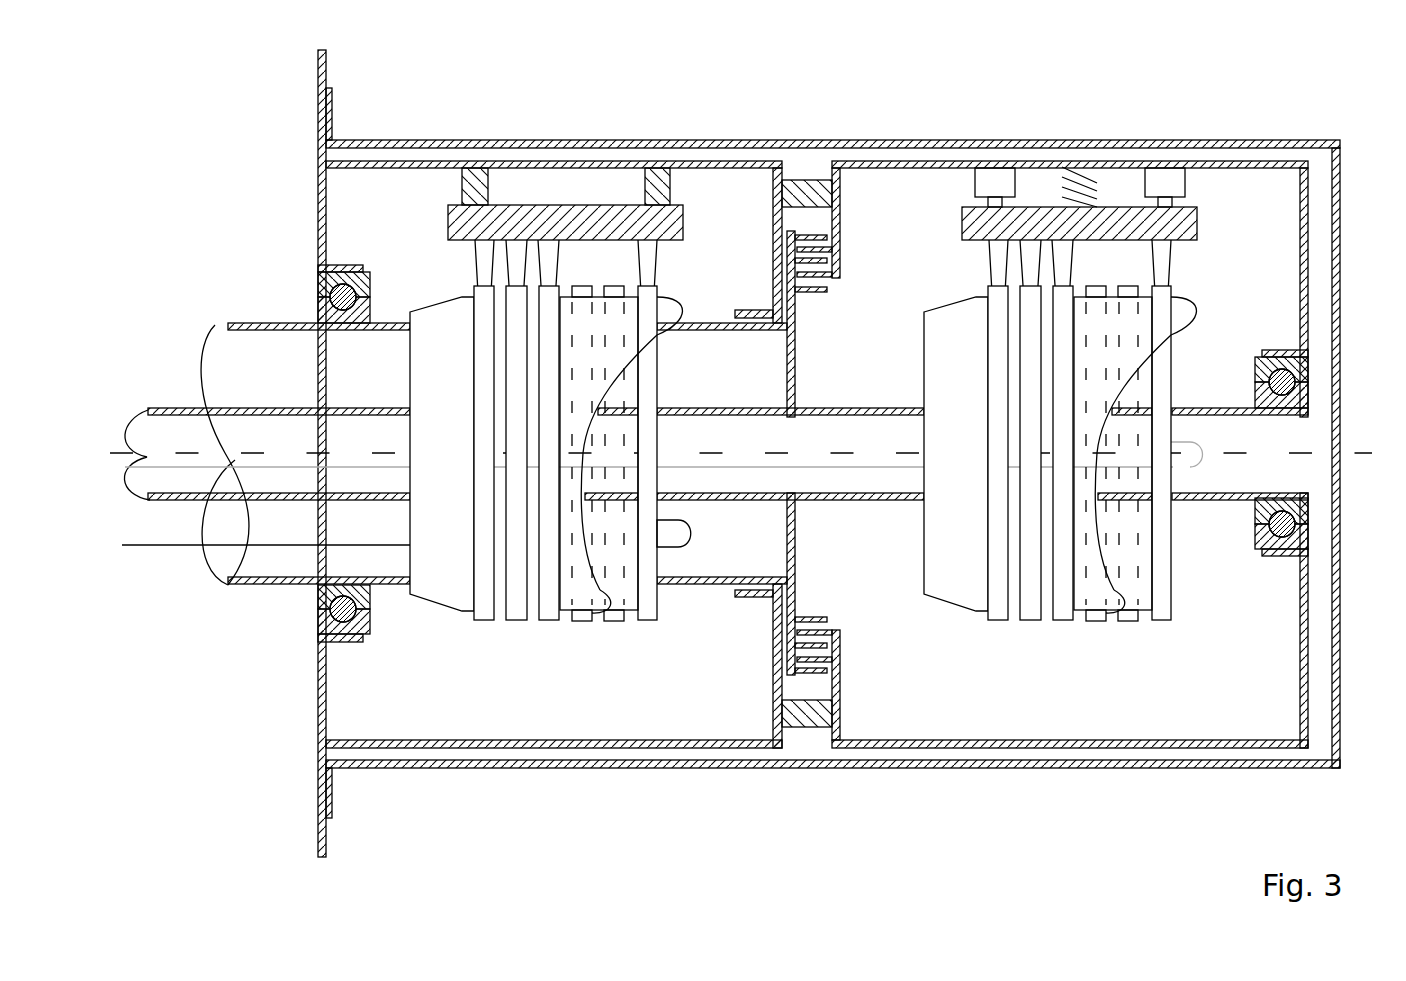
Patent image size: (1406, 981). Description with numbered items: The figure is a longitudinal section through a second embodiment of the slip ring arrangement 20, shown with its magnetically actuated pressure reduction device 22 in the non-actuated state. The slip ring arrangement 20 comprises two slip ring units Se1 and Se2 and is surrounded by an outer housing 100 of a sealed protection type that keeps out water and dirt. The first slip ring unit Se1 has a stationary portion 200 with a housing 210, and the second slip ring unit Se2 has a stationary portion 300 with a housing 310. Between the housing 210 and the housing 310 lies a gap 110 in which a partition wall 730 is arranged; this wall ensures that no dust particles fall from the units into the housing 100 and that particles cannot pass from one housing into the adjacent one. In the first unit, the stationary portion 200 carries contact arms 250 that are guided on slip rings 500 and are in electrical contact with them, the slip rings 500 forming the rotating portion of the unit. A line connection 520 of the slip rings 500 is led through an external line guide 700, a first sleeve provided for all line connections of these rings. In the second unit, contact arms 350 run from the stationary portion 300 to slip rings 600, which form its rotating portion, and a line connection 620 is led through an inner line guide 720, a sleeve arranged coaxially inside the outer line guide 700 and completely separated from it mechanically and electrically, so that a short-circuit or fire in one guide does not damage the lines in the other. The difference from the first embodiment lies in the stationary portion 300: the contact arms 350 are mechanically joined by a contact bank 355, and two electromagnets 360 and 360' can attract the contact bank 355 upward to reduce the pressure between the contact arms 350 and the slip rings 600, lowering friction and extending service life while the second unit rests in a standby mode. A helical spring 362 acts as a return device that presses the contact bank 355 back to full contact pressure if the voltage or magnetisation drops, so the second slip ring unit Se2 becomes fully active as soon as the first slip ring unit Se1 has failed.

The slip ring arrangement 20 is at (232, 121).
The magnetically actuated pressure reduction device 22 is at (1216, 185).
The outer housing 100 is at (575, 140).
The gap 110 is at (810, 690).
The stationary portion 200 is at (593, 717).
The housing 210 is at (684, 768).
The contact arms 250 is at (480, 262).
The stationary portion 300 is at (1103, 717).
The housing 310 is at (1197, 768).
The contact arms 350 is at (995, 268).
The contact bank 355 is at (1038, 217).
The electromagnet 360 is at (994, 145).
The electromagnet 360' is at (1174, 145).
The helical spring 362 is at (1097, 180).
The slip rings 500 is at (485, 622).
The line connection 520 is at (673, 547).
The slip rings 600 is at (999, 622).
The line connection 620 is at (1187, 467).
The external line guide 700 is at (288, 527).
The inner line guide 720 is at (282, 430).
The partition wall 730 is at (792, 558).
The slip ring unit Se1 is at (405, 711).
The slip ring unit Se2 is at (921, 711).